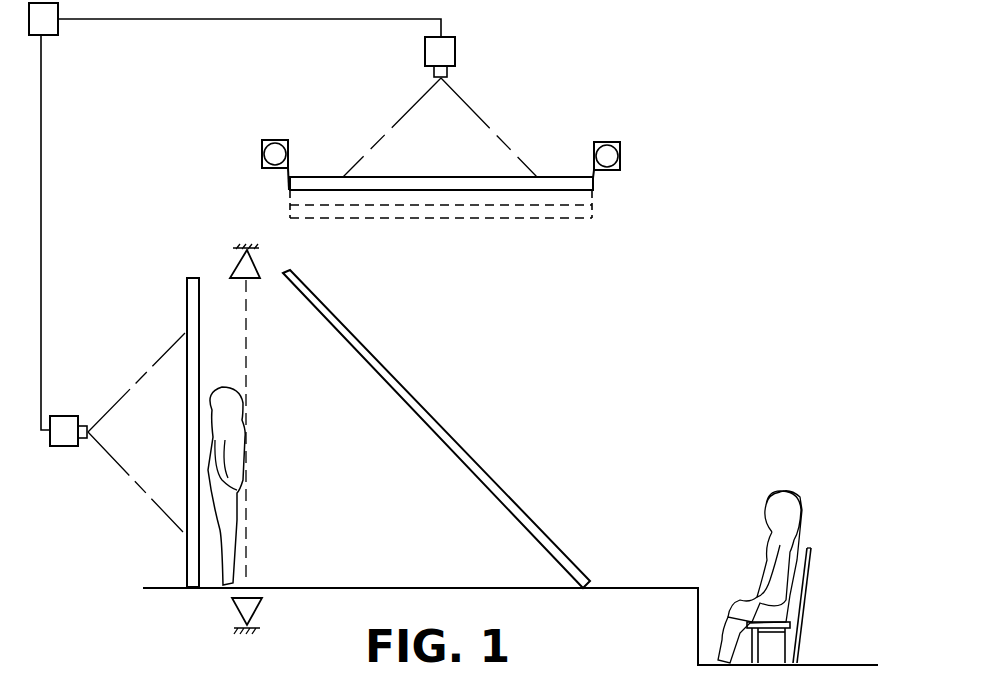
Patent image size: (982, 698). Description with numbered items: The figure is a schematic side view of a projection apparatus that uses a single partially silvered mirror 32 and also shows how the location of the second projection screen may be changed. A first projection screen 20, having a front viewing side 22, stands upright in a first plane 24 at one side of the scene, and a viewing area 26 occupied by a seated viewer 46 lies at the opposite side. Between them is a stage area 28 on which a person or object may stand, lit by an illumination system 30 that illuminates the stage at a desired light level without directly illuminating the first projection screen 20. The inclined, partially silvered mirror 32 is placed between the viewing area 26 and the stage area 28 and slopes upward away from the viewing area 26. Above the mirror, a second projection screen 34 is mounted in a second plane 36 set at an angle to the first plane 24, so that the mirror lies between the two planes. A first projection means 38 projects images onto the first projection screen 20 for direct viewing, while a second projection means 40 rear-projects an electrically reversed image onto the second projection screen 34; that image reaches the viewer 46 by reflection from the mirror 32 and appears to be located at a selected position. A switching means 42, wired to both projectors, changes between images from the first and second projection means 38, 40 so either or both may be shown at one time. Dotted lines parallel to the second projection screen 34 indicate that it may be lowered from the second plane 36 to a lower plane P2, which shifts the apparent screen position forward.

The first projection screen 20 is at (186, 414).
The front viewing side 22 is at (200, 378).
The first plane 24 is at (185, 278).
The viewing area 26 is at (803, 660).
The stage area 28 is at (386, 584).
The illumination system 30 is at (238, 274).
The partially silvered mirror 32 is at (435, 427).
The second projection screen 34 is at (468, 178).
The second plane 36 is at (594, 207).
The first projection means 38 is at (70, 418).
The second projection means 40 is at (455, 52).
The switching means 42 is at (57, 28).
The viewer 46 is at (768, 490).
The lower plane P2 is at (596, 226).